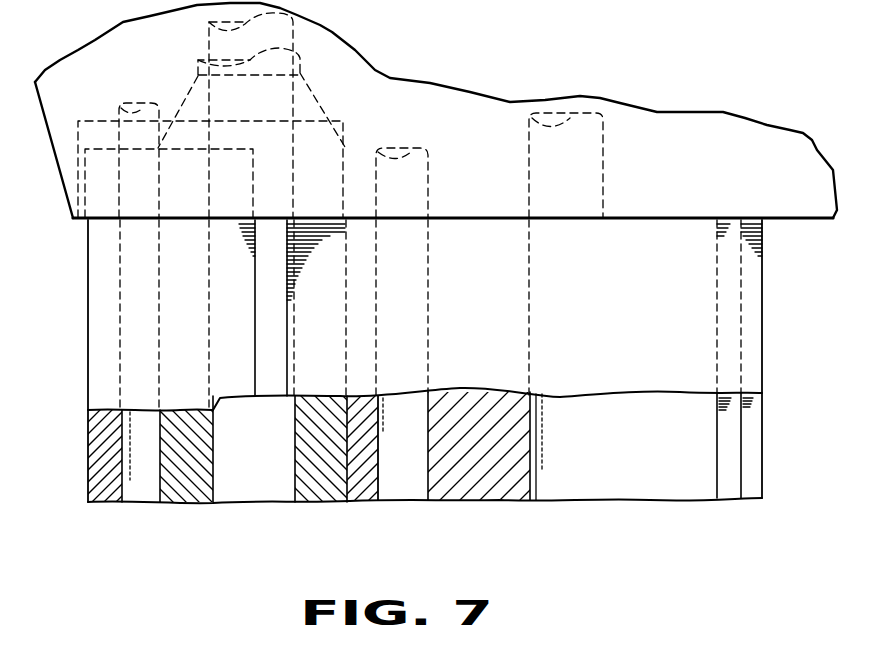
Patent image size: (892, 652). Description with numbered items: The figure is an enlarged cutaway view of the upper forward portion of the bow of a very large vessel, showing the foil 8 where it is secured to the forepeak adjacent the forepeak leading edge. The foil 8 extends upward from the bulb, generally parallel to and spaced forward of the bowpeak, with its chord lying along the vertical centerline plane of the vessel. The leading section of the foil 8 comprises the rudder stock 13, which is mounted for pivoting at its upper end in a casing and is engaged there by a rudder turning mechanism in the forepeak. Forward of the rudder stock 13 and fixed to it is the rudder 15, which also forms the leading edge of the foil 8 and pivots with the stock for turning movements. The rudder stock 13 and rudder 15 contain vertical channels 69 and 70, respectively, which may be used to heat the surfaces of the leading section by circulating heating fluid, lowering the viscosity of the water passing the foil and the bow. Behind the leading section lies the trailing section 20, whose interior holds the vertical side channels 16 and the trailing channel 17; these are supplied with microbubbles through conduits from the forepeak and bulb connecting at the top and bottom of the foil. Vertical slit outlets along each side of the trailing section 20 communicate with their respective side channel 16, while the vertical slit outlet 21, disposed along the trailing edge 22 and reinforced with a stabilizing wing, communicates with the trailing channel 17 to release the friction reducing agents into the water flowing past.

The rudder 15 is at (88, 407).
The vertical channel 70 is at (123, 490).
The rudder stock 13 is at (192, 497).
The vertical channel 69 is at (217, 484).
The foil 8 is at (365, 497).
The vertical side channel 16 is at (378, 483).
The trailing section 20 is at (507, 495).
The trailing channel 17 is at (528, 477).
The trailing edge 22 is at (730, 500).
The vertical slit outlet 21 is at (755, 500).